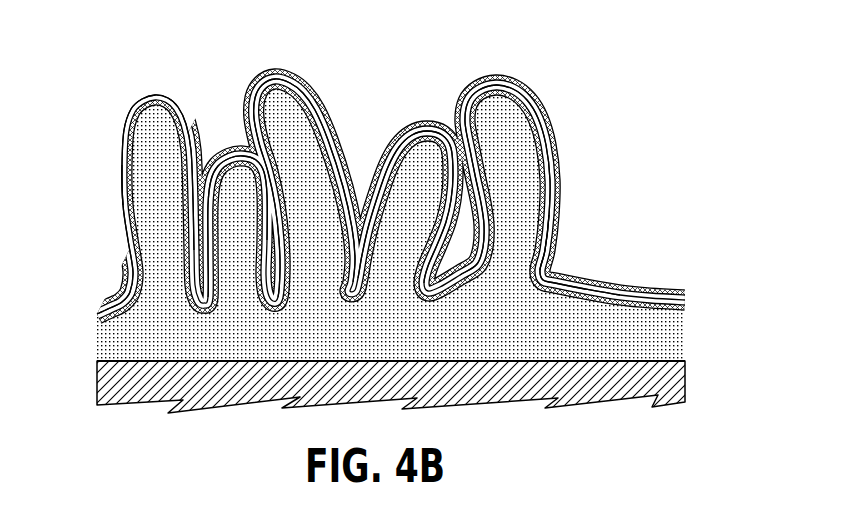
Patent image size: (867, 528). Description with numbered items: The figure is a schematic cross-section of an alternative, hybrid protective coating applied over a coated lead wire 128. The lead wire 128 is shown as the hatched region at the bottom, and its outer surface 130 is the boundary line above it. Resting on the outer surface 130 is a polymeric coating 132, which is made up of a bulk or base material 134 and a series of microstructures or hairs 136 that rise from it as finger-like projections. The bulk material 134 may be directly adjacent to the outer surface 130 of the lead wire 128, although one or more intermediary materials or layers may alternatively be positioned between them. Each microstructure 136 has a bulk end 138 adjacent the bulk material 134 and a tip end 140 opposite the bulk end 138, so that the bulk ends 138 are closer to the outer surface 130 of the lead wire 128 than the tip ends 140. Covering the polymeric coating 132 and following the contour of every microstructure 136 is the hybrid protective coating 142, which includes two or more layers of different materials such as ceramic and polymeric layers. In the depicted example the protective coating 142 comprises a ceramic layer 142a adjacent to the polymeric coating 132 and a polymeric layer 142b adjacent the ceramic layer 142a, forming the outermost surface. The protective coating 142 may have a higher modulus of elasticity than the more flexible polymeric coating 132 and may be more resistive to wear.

The lead wire 128 is at (144, 411).
The outer surface 130 is at (147, 361).
The polymeric coating 132 is at (119, 301).
The bulk material 134 is at (631, 316).
The microstructures 136 is at (148, 126).
The bulk end 138 is at (532, 281).
The tip end 140 is at (507, 107).
The protective coating 142 is at (141, 88).
The ceramic layer 142a is at (142, 221).
The polymeric layer 142b is at (133, 188).